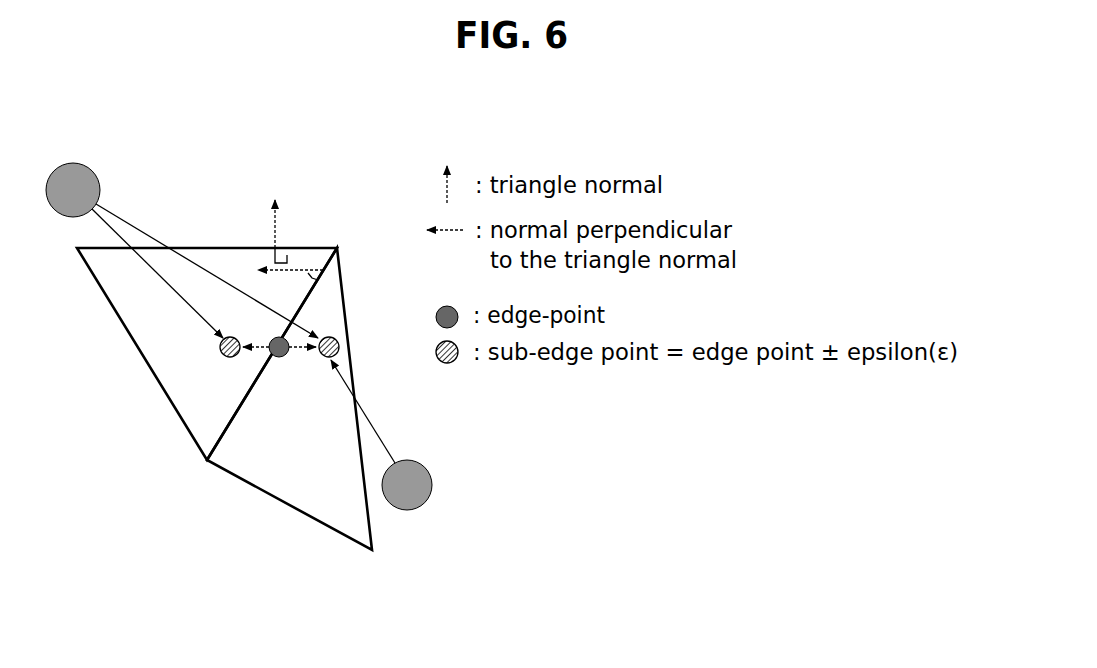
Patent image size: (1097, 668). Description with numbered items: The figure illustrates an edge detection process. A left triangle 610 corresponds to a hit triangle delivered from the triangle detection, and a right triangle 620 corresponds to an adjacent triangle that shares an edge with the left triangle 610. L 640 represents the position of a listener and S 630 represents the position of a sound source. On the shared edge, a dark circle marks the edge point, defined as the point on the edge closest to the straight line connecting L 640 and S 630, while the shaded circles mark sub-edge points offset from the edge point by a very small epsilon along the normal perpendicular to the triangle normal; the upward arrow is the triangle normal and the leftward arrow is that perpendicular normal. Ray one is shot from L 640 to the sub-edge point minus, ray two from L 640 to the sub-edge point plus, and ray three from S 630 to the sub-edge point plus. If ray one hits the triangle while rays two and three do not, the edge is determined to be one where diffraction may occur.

The left triangle 610 is at (155, 365).
The right triangle 620 is at (291, 498).
The S 630 is at (407, 511).
The L 640 is at (74, 162).